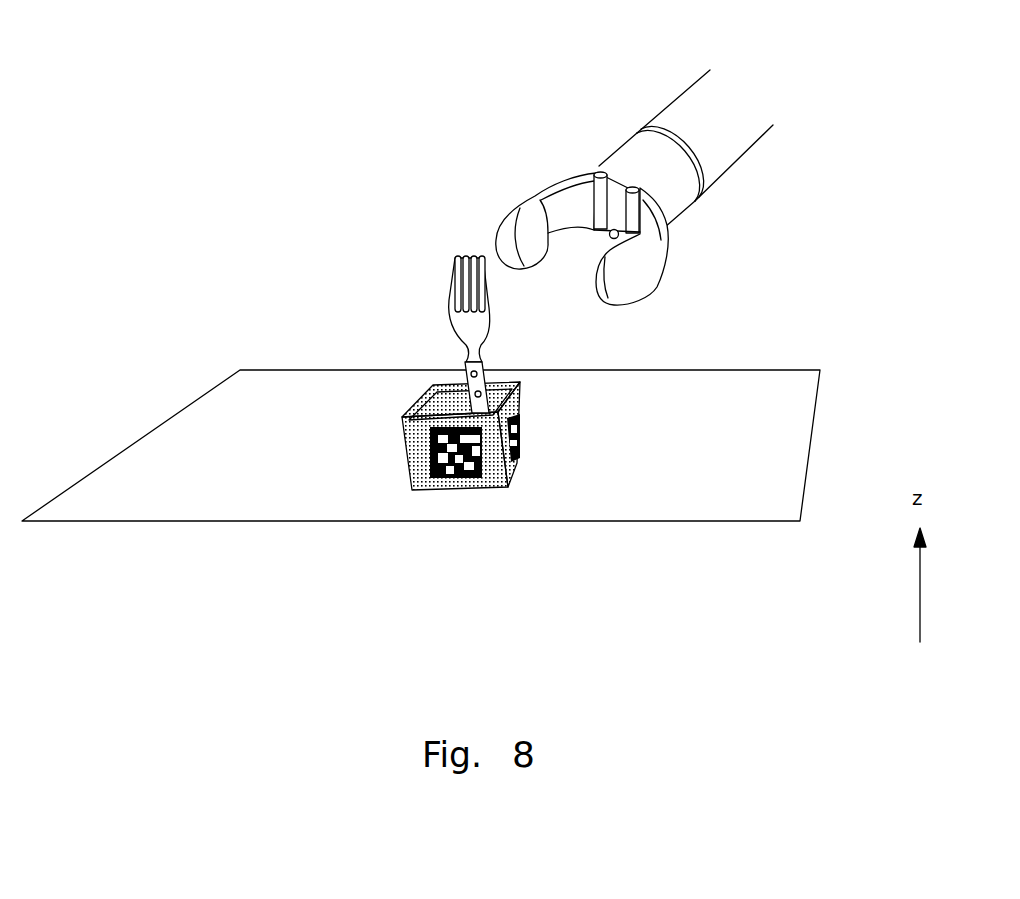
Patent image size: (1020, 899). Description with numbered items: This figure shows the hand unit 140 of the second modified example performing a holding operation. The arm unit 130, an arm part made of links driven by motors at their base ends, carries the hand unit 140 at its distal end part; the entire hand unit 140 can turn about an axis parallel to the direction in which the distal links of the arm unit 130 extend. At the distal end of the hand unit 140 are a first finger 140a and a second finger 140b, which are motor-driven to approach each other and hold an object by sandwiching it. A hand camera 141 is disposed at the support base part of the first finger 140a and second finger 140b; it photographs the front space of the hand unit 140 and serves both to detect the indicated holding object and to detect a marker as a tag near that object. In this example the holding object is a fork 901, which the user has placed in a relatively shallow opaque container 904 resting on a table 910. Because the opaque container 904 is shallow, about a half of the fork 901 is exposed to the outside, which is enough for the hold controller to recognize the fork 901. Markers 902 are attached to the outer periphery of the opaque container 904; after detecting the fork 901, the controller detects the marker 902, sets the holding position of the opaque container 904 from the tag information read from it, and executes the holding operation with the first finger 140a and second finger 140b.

The arm unit 130 is at (698, 105).
The hand unit 140 is at (589, 185).
The first finger 140a is at (515, 212).
The second finger 140b is at (650, 263).
The hand camera 141 is at (613, 233).
The fork 901 is at (455, 258).
The marker 902 is at (483, 483).
The opaque container 904 is at (402, 435).
The table 910 is at (796, 378).